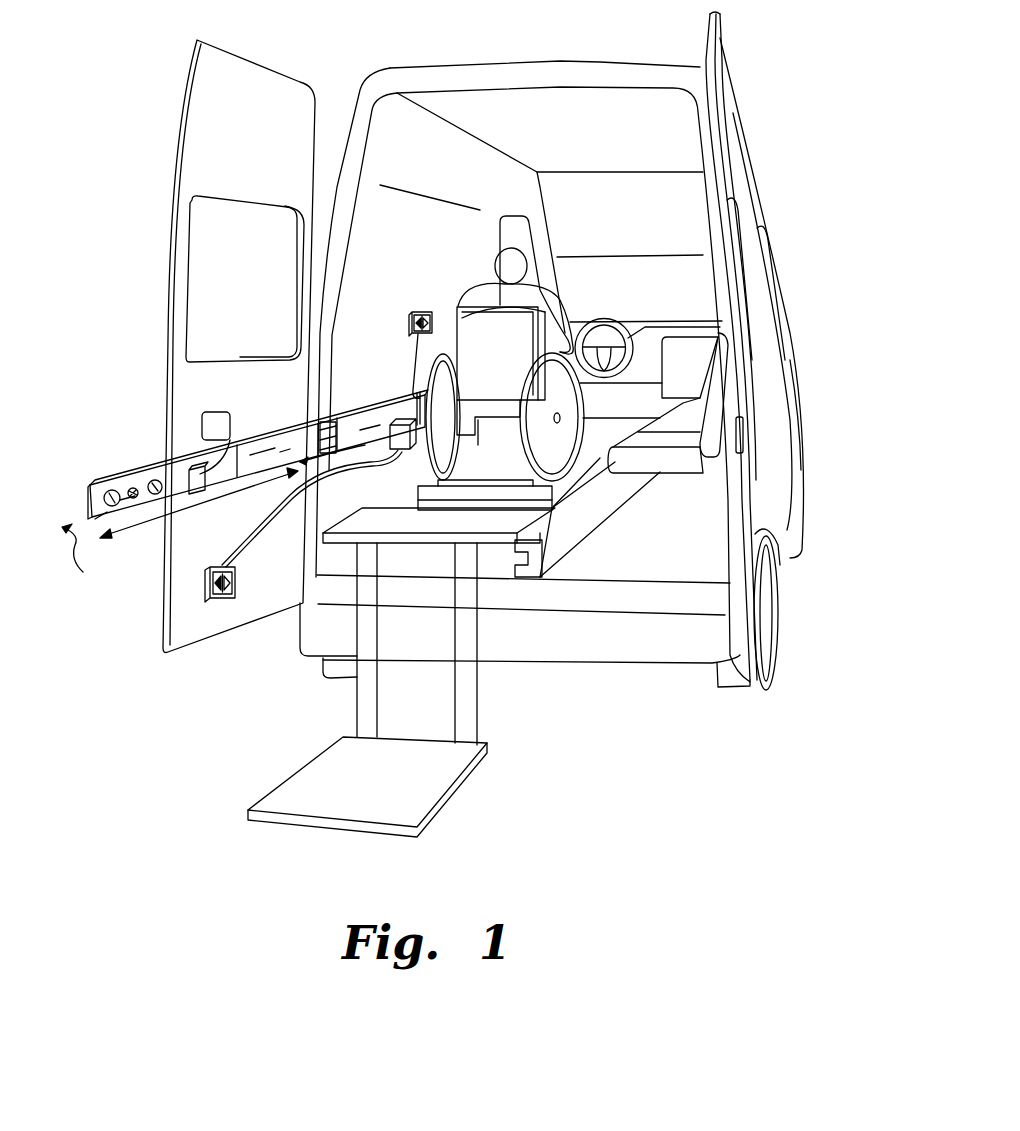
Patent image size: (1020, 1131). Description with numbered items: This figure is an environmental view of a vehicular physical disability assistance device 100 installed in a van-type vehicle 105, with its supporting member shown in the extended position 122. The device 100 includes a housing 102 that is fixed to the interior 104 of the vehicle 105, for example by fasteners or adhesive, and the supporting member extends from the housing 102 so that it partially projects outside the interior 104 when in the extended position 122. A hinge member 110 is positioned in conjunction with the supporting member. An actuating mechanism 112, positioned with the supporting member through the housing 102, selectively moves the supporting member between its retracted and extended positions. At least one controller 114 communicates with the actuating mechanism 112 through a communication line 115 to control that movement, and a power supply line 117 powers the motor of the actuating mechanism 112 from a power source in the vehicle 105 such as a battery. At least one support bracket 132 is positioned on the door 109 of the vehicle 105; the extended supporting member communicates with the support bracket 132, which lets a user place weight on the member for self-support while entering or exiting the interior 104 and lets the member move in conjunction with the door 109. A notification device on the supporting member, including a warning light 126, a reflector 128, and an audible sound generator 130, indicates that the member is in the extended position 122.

The vehicular physical disability assistance device 100 is at (243, 405).
The housing 102 is at (352, 408).
The interior 104 is at (396, 381).
The vehicle 105 is at (795, 116).
The door 109 is at (183, 163).
The hinge member 110 is at (340, 408).
The actuating mechanism 112 is at (297, 478).
The controller 114 is at (220, 600).
The communication line 115 is at (262, 535).
The power supply line 117 is at (397, 482).
The extended position 122 is at (83, 565).
The warning light 126 is at (107, 512).
The reflector 128 is at (156, 479).
The audible sound generator 130 is at (130, 486).
The support bracket 132 is at (228, 418).